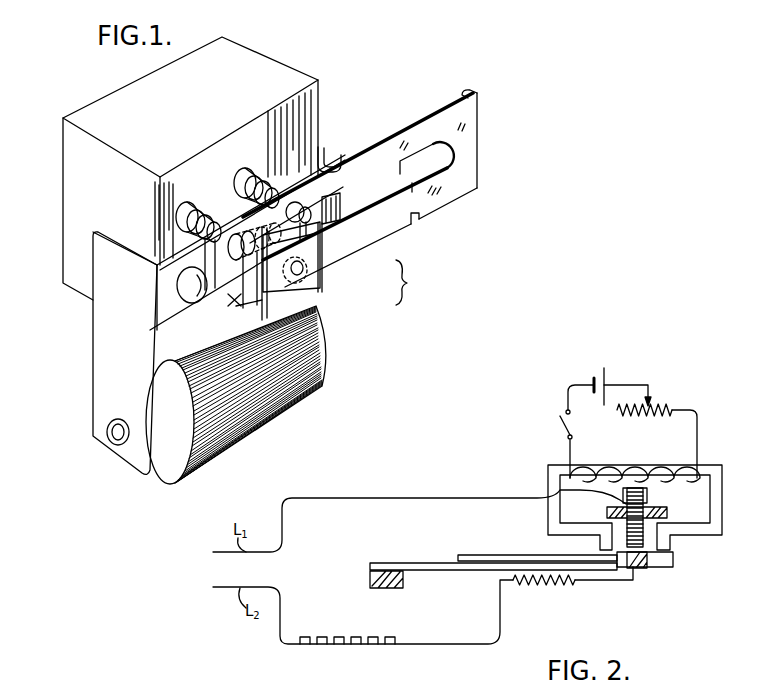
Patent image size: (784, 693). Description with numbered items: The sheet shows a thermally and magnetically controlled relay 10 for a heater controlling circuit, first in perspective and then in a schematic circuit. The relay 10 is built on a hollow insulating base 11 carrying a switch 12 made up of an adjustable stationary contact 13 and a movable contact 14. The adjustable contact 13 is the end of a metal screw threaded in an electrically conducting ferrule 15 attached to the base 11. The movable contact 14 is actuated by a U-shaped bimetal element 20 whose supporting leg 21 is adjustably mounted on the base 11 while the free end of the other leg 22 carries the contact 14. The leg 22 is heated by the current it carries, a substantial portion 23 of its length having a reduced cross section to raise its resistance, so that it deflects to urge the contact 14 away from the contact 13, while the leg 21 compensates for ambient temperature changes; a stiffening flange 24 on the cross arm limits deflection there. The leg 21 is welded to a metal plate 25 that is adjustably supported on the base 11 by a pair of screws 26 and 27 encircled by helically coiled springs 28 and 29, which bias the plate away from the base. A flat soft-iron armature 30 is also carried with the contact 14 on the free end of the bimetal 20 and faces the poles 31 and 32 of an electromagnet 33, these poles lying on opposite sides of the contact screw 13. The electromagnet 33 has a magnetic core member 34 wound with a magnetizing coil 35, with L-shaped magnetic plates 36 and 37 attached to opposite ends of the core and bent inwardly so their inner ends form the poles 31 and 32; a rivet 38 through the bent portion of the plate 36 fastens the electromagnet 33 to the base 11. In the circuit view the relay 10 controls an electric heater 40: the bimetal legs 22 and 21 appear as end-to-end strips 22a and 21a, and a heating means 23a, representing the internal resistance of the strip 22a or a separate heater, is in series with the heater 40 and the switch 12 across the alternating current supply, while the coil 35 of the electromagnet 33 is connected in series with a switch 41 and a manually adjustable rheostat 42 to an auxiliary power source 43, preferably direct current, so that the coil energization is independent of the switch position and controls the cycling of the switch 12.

In FIG. 1, the relay 10 is at (93, 330).
In FIG. 2, the relay 10 is at (549, 484).
In FIG. 1, the insulating base 11 is at (297, 80).
In FIG. 2, the insulating base 11 is at (667, 513).
In FIG. 1, the switch 12 is at (428, 295).
In FIG. 2, the switch 12 is at (648, 546).
In FIG. 1, the adjustable stationary contact 13 is at (316, 238).
In FIG. 2, the adjustable stationary contact 13 is at (644, 497).
In FIG. 1, the movable contact 14 is at (306, 262).
In FIG. 2, the movable contact 14 is at (644, 565).
In FIG. 2, the electrically conducting ferrule 15 is at (623, 502).
In FIG. 1, the U-shaped bimetal element 20 is at (460, 201).
In FIG. 1, the supporting bimetal leg 21 is at (385, 147).
In FIG. 2, the compensating bimetal strip 21a is at (428, 572).
In FIG. 1, the contact carrying bimetal leg 22 is at (417, 222).
In FIG. 2, the current-responsive bimetal strip 22a is at (505, 555).
In FIG. 1, the reduced cross section portion 23 is at (393, 226).
In FIG. 2, the heating means 23a is at (540, 586).
In FIG. 1, the stiffening flange 24 is at (465, 87).
In FIG. 1, the metal plate 25 is at (240, 217).
In FIG. 1, the adjusting screw 26 is at (302, 203).
In FIG. 1, the adjusting screw 27 is at (229, 299).
In FIG. 1, the helically coiled spring 28 is at (267, 176).
In FIG. 1, the helically coiled spring 29 is at (176, 231).
In FIG. 1, the magnetic armature 30 is at (330, 226).
In FIG. 2, the magnetic armature 30 is at (674, 564).
In FIG. 1, the pole 31 is at (242, 305).
In FIG. 2, the pole 31 is at (598, 550).
In FIG. 1, the pole 32 is at (321, 205).
In FIG. 2, the pole 32 is at (668, 548).
In FIG. 1, the electromagnet 33 is at (92, 400).
In FIG. 2, the electromagnet 33 is at (722, 466).
In FIG. 1, the core member 34 is at (163, 447).
In FIG. 1, the magnetizing coil 35 is at (223, 447).
In FIG. 2, the magnetizing coil 35 is at (634, 464).
In FIG. 1, the L-shaped magnetic plate 36 is at (107, 365).
In FIG. 1, the L-shaped magnetic plate 37 is at (328, 149).
In FIG. 1, the rivet 38 is at (185, 285).
In FIG. 2, the electric heater 40 is at (345, 645).
In FIG. 2, the switch 41 is at (562, 423).
In FIG. 2, the rheostat 42 is at (650, 397).
In FIG. 2, the auxiliary power source 43 is at (604, 368).